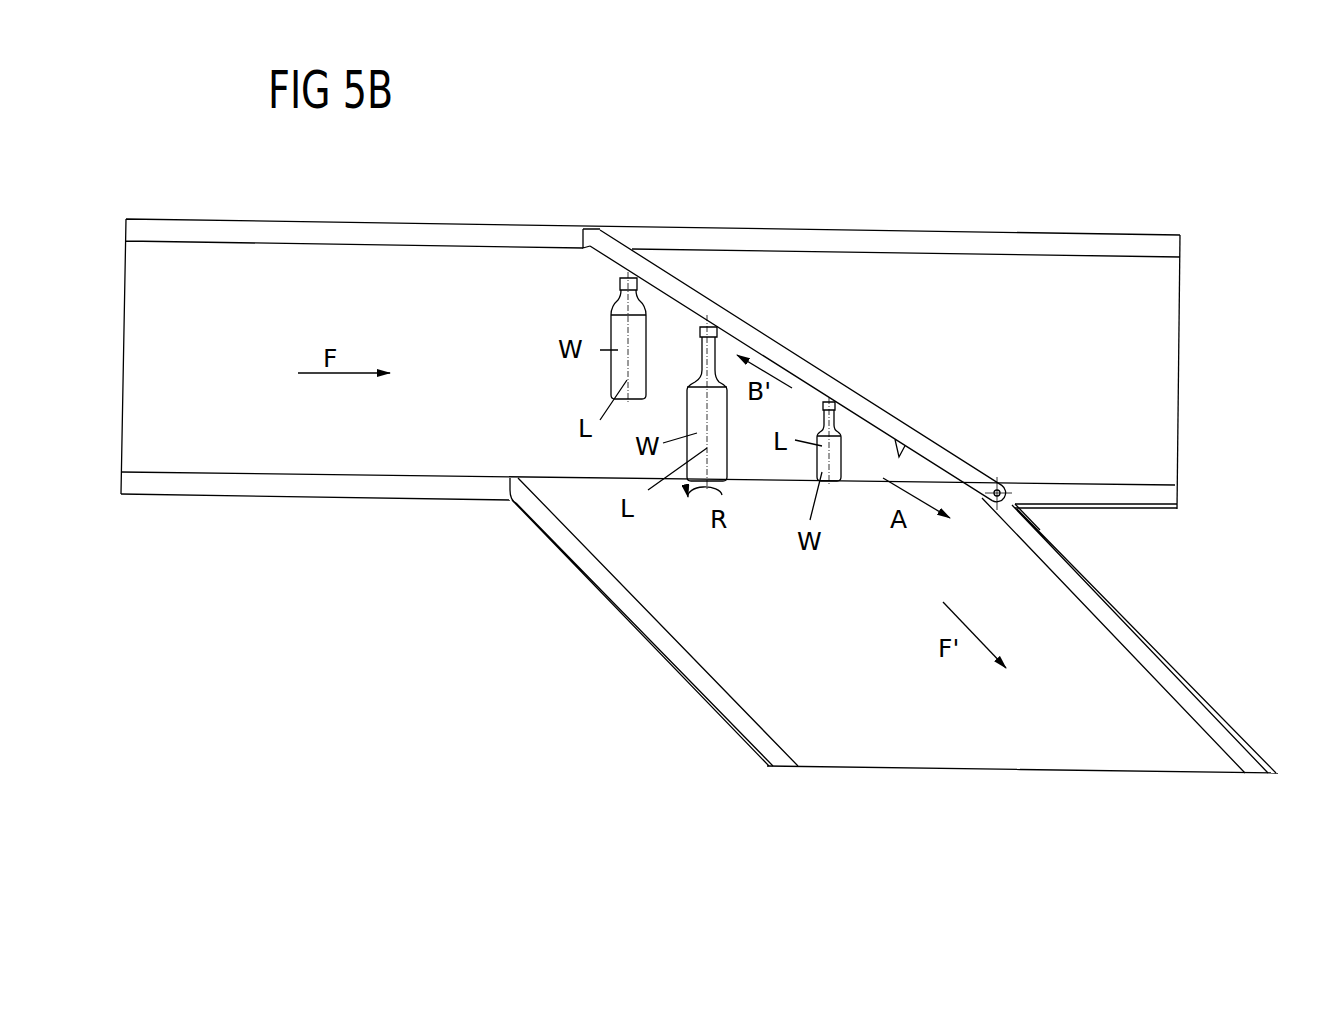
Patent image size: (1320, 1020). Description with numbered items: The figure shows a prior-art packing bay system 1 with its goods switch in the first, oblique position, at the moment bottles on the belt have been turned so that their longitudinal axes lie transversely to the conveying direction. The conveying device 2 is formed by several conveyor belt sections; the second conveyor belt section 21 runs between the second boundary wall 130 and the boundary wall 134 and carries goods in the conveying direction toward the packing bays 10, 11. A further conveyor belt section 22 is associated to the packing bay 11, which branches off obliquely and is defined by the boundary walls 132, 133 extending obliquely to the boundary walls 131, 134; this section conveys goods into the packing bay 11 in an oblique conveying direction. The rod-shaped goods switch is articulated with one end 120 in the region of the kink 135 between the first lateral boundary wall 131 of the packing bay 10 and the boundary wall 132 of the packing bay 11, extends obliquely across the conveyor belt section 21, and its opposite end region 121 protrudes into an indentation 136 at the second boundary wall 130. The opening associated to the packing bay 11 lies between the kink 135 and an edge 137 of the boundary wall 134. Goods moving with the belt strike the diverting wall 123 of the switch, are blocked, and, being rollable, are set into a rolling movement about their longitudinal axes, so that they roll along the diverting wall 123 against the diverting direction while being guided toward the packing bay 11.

The packing bay system 1 is at (882, 190).
The conveying device 2 is at (340, 447).
The packing bay 10 is at (1157, 354).
The packing bay 11 is at (1145, 755).
The second conveyor belt section 21 is at (460, 465).
The further conveyor belt section 22 is at (882, 743).
The end 120 is at (1000, 485).
The diverter mounting end 121 is at (601, 237).
The diverting wall 123 is at (903, 450).
The second boundary wall 130 is at (1026, 246).
The first lateral boundary wall 131 is at (1162, 510).
The boundary wall 132 is at (1192, 683).
The boundary wall 133 is at (728, 727).
The boundary wall 134 is at (235, 488).
The kink 135 is at (1020, 508).
The indentation 136 is at (638, 240).
The edge 137 is at (517, 503).